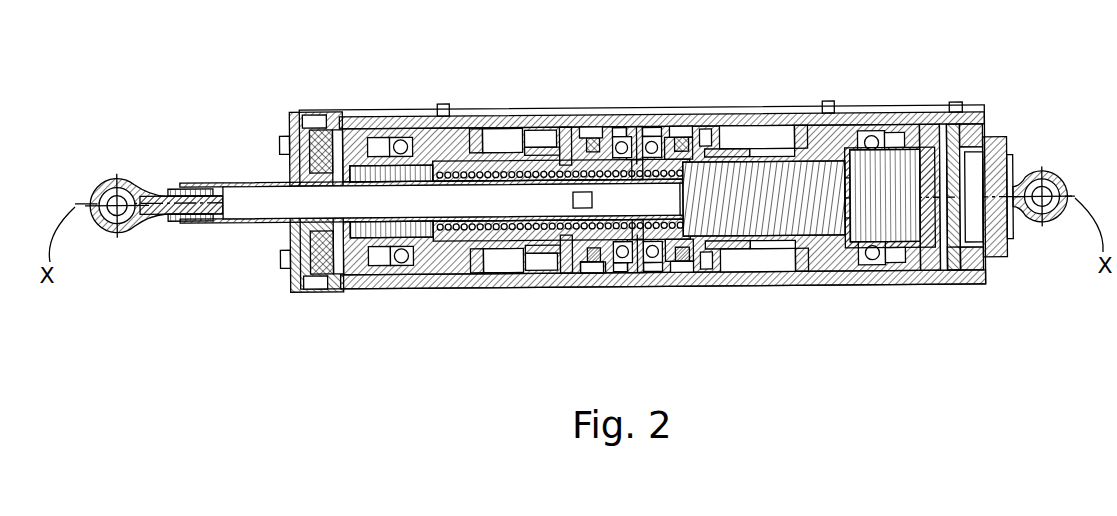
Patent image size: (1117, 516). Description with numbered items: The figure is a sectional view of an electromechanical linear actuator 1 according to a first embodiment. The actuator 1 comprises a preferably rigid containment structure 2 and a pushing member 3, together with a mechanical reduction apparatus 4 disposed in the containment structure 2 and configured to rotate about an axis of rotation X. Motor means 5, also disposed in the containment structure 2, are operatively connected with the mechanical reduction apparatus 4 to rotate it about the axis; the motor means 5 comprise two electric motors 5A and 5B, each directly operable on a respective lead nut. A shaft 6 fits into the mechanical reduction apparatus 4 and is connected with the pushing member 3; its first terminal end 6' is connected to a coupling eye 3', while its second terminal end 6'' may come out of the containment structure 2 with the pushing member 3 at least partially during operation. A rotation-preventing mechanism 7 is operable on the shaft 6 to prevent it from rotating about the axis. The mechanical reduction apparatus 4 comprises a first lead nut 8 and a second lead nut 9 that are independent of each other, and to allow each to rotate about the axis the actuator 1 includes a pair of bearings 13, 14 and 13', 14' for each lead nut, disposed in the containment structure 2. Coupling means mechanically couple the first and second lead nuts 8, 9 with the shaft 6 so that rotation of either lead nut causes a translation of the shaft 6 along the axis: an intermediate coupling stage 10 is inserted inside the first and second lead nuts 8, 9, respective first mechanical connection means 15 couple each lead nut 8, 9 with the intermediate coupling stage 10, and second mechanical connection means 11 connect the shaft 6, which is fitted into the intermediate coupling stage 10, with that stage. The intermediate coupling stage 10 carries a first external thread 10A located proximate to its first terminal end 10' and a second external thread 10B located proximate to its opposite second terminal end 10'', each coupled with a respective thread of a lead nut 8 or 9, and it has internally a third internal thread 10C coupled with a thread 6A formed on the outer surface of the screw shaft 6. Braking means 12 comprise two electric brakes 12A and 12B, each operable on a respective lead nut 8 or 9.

The actuator 1 is at (1017, 78).
The containment structure 2 is at (735, 112).
The pushing member 3 is at (151, 172).
The coupling eye 3' is at (1054, 159).
The mechanical reduction apparatus 4 is at (865, 118).
The motor means 5 is at (497, 290).
The electric motor 5A is at (790, 118).
The electric motor 5B is at (500, 118).
The shaft 6 is at (434, 131).
The first terminal end 6' is at (957, 303).
The second terminal end 6'' is at (181, 164).
The thread 6A is at (588, 290).
The rotation-preventing mechanism 7 is at (291, 110).
The first lead nut 8 is at (822, 118).
The second lead nut 9 is at (555, 118).
The intermediate coupling stage 10 is at (683, 156).
The first external thread 10A is at (770, 118).
The second external thread 10B is at (525, 118).
The third internal thread 10C is at (640, 290).
The first terminal end 10' is at (929, 145).
The second terminal end 10'' is at (355, 158).
The second mechanical connection means 11 is at (625, 118).
The braking means 12 is at (578, 292).
The electric brake 12A is at (702, 118).
The electric brake 12B is at (605, 118).
The bearing 13 is at (686, 261).
The bearing 13' is at (634, 260).
The bearing 14 is at (893, 245).
The bearing 14' is at (419, 253).
The first mechanical connection means 15 is at (470, 118).